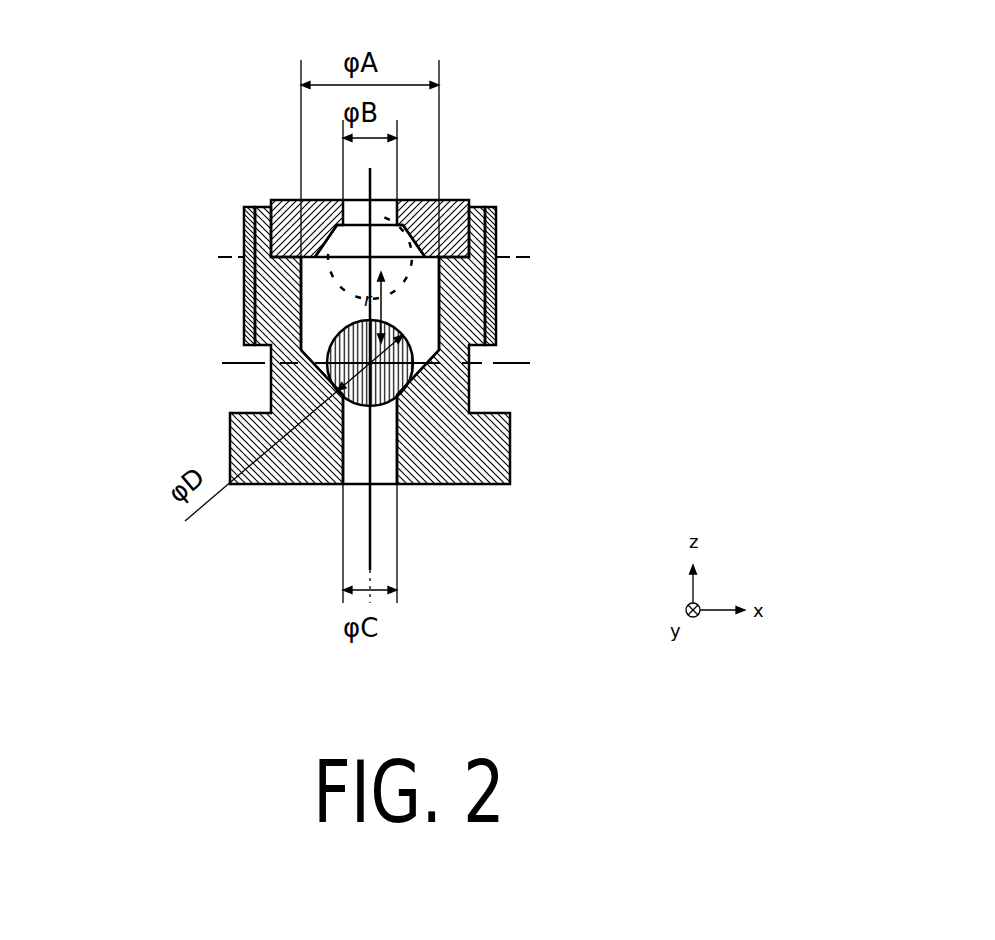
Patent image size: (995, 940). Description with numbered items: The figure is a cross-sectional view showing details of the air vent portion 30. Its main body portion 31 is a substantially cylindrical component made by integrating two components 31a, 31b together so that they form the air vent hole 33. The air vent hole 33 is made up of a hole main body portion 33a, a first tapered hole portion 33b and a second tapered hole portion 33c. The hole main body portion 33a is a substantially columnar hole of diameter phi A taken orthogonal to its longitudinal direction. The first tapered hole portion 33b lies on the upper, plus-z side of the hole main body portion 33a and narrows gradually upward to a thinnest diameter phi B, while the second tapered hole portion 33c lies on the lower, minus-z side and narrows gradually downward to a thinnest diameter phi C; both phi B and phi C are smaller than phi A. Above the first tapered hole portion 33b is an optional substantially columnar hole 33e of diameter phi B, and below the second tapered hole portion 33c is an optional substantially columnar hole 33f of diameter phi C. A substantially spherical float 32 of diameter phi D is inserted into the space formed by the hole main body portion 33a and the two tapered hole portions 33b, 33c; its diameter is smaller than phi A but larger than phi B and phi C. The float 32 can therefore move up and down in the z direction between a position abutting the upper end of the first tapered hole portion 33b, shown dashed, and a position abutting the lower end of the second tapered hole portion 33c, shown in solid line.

The air vent portion 30 is at (672, 102).
The main body portion 31 is at (120, 145).
The component 31a is at (271, 199).
The component 31b is at (245, 207).
The float 32 is at (337, 342).
The air vent hole 33 is at (663, 195).
The hole main body portion 33a is at (403, 331).
The first tapered hole portion 33b is at (425, 247).
The second tapered hole portion 33c is at (416, 352).
The columnar hole 33e is at (384, 219).
The columnar hole 33f is at (386, 434).